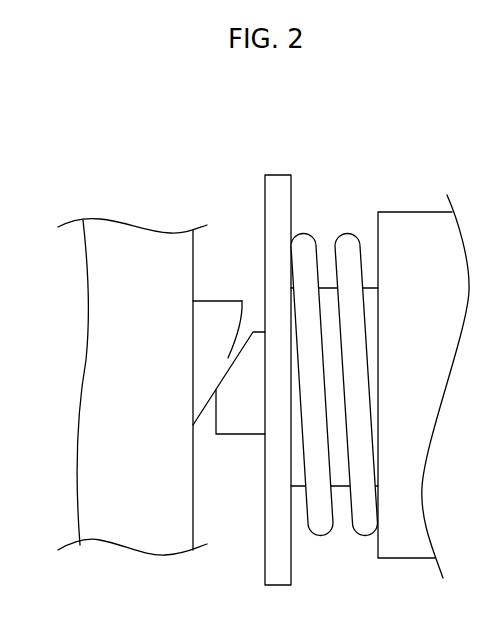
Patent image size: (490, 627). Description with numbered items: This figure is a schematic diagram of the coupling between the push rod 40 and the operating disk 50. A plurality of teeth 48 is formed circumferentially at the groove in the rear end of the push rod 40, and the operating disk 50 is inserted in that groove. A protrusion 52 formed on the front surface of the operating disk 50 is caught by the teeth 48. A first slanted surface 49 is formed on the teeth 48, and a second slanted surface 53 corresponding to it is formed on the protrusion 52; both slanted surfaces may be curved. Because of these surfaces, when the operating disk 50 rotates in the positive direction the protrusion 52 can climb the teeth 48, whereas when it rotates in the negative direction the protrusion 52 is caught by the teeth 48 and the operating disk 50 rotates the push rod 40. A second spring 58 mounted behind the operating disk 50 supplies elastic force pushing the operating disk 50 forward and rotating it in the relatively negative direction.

The push rod 40 is at (97, 375).
The teeth 48 is at (220, 300).
The first slanted surface 49 is at (193, 425).
The operating disk 50 is at (325, 295).
The protrusion 52 is at (245, 428).
The second slanted surface 53 is at (243, 323).
The second spring 58 is at (347, 243).